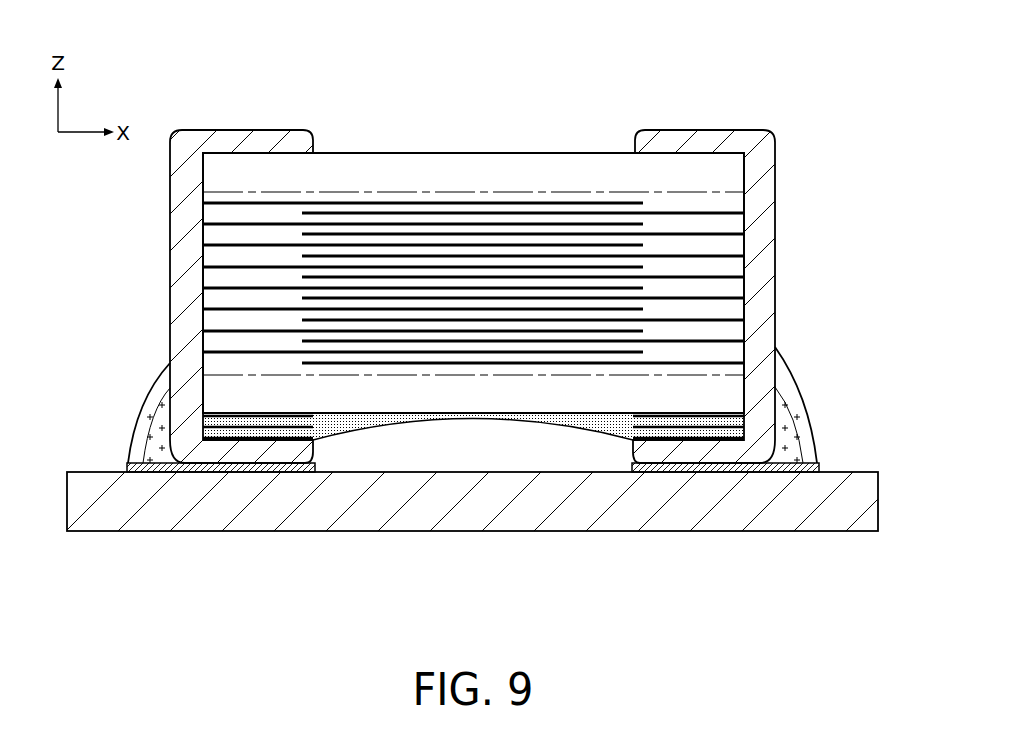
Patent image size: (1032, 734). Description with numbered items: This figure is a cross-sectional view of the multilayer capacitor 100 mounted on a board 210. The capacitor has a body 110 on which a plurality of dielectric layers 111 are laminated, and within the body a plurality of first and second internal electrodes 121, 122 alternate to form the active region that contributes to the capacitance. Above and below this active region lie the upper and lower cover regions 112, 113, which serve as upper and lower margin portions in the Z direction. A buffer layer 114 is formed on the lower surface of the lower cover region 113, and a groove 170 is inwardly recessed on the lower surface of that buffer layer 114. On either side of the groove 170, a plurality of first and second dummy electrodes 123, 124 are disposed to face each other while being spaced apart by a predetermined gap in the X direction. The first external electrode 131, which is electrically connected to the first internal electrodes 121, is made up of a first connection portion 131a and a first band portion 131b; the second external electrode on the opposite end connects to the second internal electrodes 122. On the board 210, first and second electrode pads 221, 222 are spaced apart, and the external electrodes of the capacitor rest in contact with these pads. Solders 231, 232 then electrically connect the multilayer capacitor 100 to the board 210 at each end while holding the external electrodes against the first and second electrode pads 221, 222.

The multilayer capacitor 100 is at (478, 152).
The body 110 is at (607, 152).
The dielectric layer 111 is at (508, 209).
The upper cover region 112 is at (437, 175).
The lower cover region 113 is at (477, 397).
The buffer layer 114 is at (250, 440).
The first internal electrode 121 is at (363, 203).
The second internal electrode 122 is at (577, 213).
The first dummy electrode 123 is at (273, 441).
The second dummy electrode 124 is at (673, 428).
The groove 170 is at (585, 430).
The board 210 is at (412, 517).
The first electrode pad 221 is at (293, 446).
The second electrode pad 222 is at (653, 445).
The solder 231 is at (138, 448).
The solder 232 is at (808, 448).
The first external electrode 131 is at (88, 600).
The first connection portion 131a is at (147, 395).
The first band portion 131b is at (228, 466).